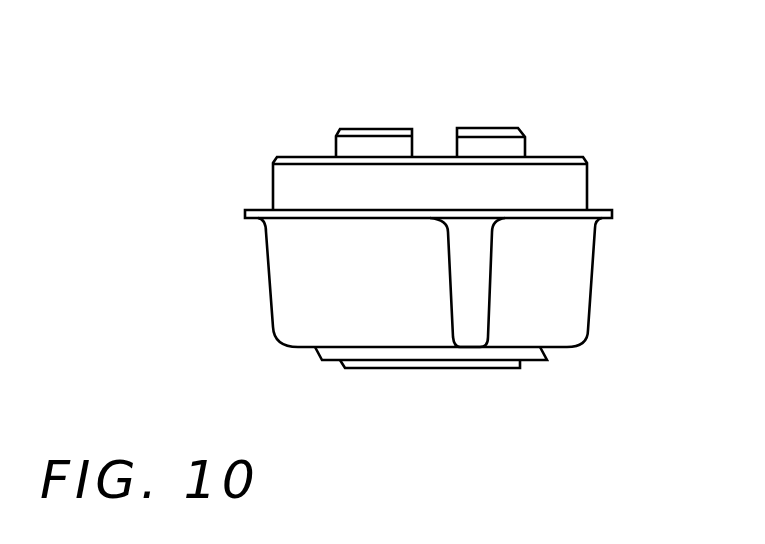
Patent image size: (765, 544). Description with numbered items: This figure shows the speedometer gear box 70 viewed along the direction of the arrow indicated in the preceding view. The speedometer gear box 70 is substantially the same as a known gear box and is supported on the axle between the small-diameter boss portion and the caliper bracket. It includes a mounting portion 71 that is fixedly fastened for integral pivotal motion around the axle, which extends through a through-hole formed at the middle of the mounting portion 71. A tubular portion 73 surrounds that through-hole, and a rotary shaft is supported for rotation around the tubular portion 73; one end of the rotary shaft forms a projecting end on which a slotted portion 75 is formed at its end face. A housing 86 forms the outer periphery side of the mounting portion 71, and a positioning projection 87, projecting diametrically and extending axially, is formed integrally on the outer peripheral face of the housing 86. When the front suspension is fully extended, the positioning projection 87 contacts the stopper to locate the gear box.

The speedometer gear box 70 is at (257, 142).
The mounting portion 71 is at (592, 185).
The tubular portion 73 is at (485, 140).
The slotted portion 75 is at (443, 145).
The housing 86 is at (582, 273).
The positioning projection 87 is at (485, 318).